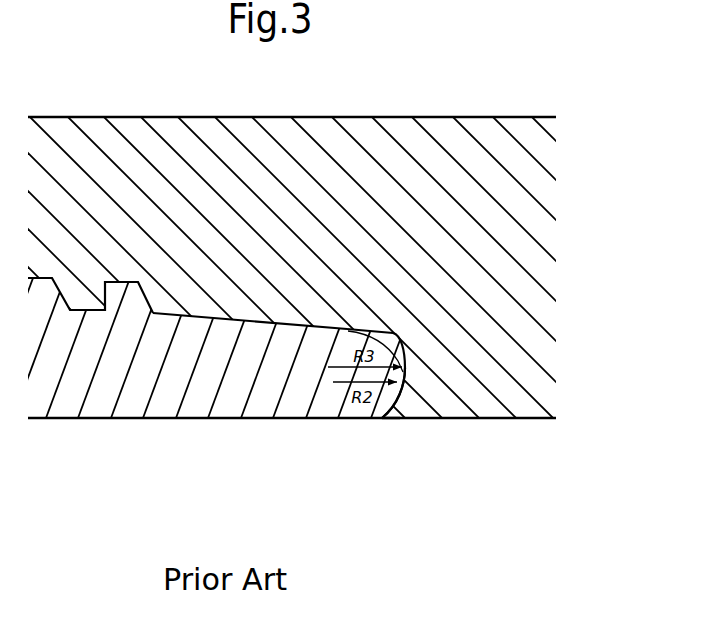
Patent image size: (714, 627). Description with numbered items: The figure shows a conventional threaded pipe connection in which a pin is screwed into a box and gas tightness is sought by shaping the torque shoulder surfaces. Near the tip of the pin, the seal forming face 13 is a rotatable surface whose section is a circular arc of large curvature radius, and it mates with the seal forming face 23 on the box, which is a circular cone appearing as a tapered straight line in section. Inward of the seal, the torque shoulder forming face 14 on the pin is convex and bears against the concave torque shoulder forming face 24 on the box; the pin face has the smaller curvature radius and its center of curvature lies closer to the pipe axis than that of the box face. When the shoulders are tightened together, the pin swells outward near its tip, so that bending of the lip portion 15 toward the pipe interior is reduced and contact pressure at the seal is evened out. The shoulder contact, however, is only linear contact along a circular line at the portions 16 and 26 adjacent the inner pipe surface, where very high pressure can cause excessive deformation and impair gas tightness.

The seal forming face on the pin 13 is at (295, 335).
The lip portion 15 is at (317, 377).
The torque shoulder forming face on the pin 14 is at (385, 393).
The contact portion on the pin torque shoulder 16 is at (383, 407).
The contact portion on the box torque shoulder 26 is at (397, 410).
The torque shoulder forming face on the box 24 is at (410, 393).
The box member 23 is at (297, 318).